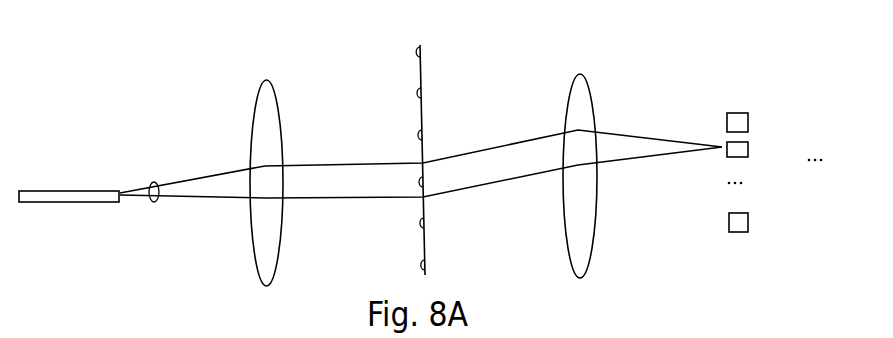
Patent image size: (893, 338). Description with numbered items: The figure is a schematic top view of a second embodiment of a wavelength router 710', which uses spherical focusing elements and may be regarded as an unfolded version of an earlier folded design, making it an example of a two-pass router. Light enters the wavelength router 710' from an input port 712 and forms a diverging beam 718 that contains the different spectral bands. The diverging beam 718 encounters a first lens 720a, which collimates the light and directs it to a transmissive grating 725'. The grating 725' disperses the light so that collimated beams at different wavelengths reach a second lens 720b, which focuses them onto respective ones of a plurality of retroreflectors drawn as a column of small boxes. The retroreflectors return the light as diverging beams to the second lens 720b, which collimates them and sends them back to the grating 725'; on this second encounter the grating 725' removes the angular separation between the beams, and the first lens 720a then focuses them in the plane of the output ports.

The wavelength router 710' is at (73, 82).
The input port 712 is at (37, 202).
The diverging beam 718 is at (153, 203).
The first lens 720a is at (255, 105).
The transmissive grating 725' is at (444, 146).
The second lens 720b is at (568, 102).